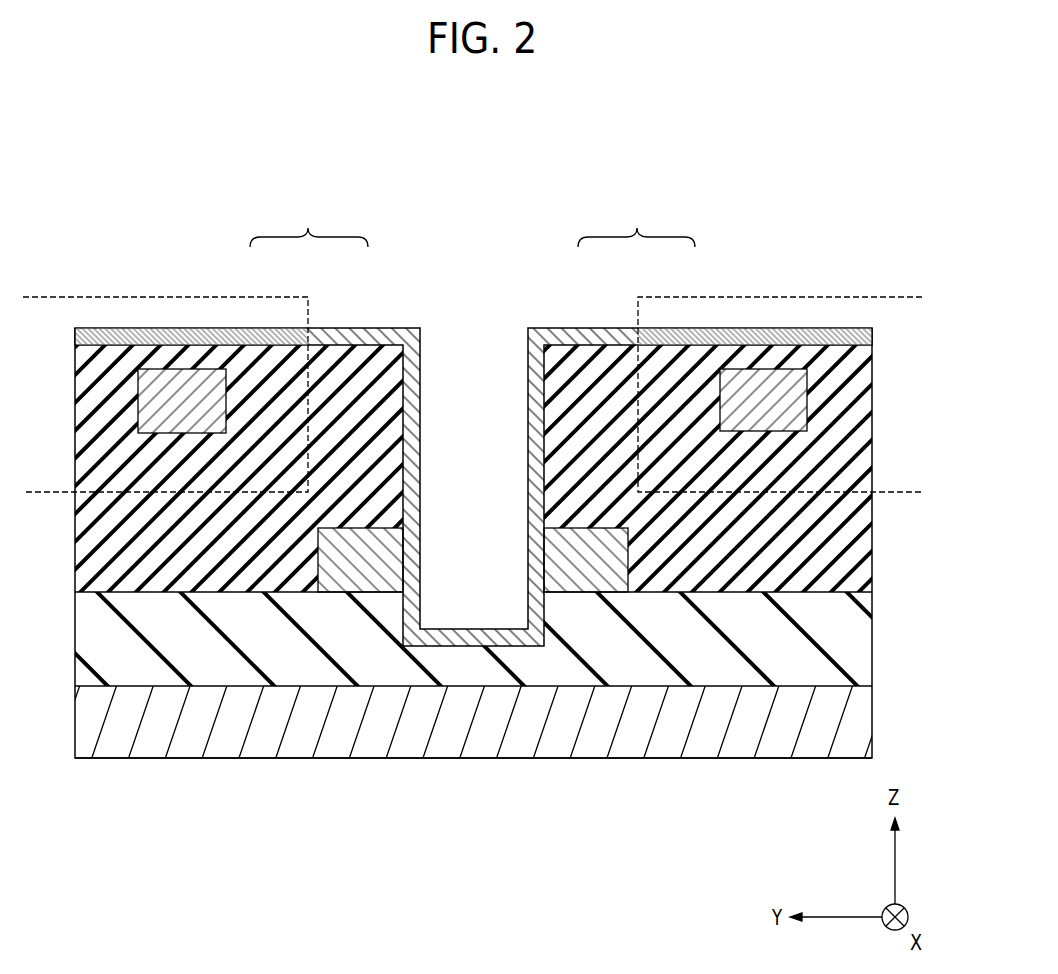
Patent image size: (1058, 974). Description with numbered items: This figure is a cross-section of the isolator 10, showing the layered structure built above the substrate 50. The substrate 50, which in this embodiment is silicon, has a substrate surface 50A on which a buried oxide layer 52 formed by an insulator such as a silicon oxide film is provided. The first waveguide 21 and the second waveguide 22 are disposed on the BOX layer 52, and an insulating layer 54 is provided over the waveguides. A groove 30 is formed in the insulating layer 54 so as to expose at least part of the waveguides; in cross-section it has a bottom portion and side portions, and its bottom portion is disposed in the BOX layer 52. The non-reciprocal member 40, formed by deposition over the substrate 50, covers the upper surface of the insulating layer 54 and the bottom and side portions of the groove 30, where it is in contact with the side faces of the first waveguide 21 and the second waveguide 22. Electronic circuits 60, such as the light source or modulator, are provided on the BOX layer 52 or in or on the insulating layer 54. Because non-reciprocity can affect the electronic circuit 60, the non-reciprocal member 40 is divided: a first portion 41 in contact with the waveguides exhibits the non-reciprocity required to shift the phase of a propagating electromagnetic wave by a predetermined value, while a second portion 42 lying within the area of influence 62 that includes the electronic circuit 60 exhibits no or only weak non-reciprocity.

The isolator 10 is at (536, 200).
The first waveguide 21 is at (363, 575).
The second waveguide 22 is at (615, 575).
The groove 30 is at (489, 560).
The non-reciprocal member 40 is at (472, 222).
The first portion 41 is at (368, 333).
The second portion 42 is at (232, 333).
The substrate 50 is at (243, 733).
The substrate surface 50A is at (245, 685).
The buried oxide (BOX) layer 52 is at (794, 653).
The insulating layer 54 is at (209, 558).
The electronic circuit 60 is at (160, 397).
The area of influence 62 is at (100, 297).